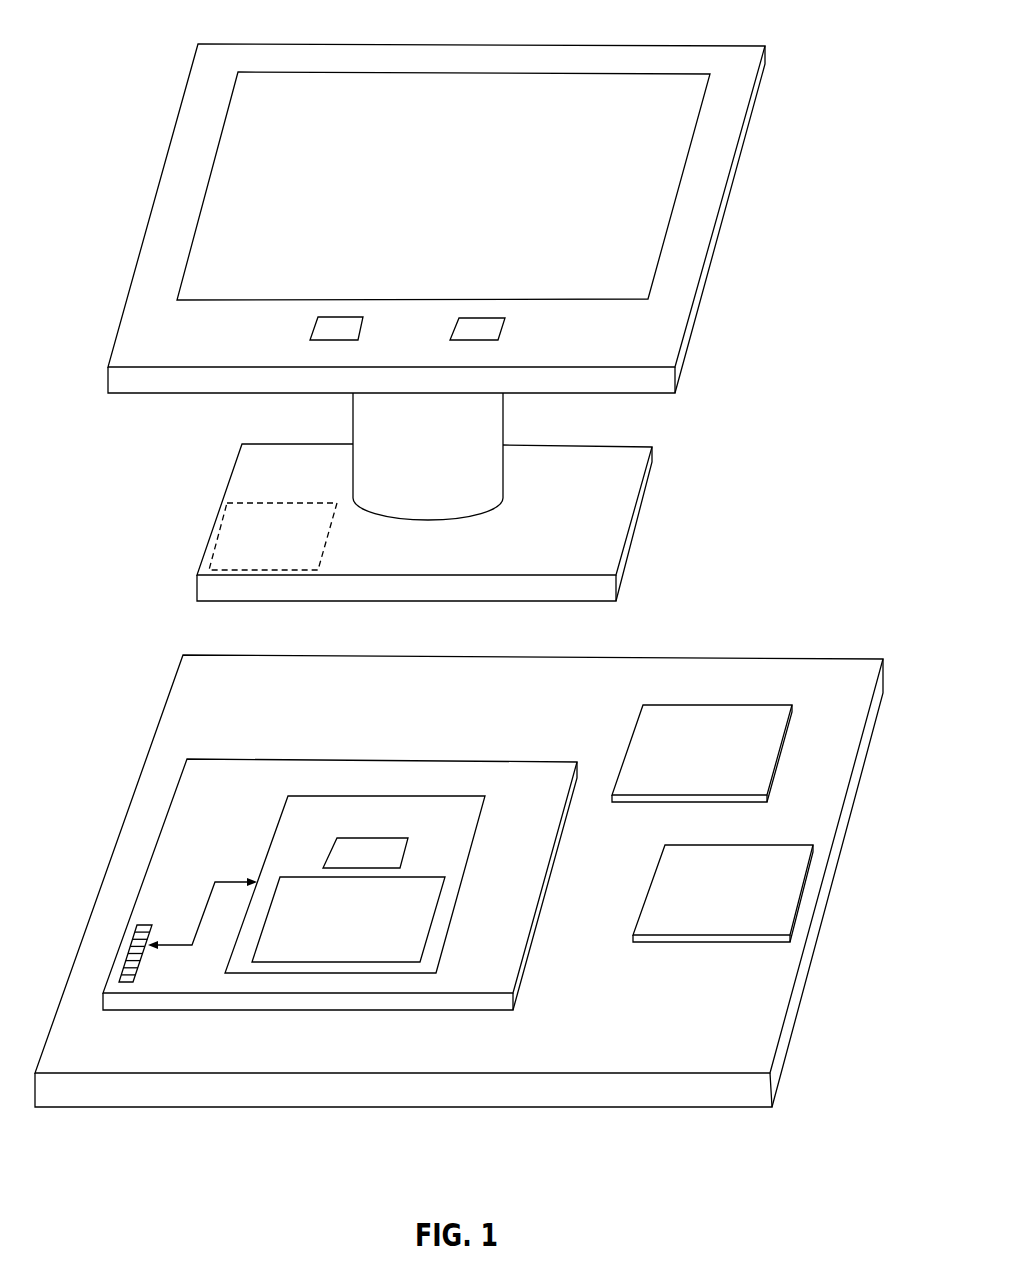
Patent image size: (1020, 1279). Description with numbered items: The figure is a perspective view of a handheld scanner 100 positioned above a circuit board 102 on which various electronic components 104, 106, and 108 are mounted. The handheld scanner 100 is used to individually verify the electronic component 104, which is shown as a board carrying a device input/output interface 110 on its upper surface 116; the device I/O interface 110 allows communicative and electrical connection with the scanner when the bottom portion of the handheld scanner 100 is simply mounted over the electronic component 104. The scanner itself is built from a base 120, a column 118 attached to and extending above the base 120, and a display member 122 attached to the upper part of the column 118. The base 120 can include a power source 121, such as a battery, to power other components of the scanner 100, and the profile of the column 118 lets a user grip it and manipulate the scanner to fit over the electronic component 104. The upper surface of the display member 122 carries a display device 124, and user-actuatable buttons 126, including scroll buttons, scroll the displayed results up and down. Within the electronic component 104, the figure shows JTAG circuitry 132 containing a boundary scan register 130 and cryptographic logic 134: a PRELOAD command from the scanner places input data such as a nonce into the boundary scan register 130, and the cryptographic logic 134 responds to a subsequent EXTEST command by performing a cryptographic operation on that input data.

The handheld scanner 100 is at (810, 223).
The circuit board 102 is at (540, 1082).
The electronic component 104 is at (513, 762).
The electronic component 106 is at (732, 705).
The electronic component 108 is at (747, 845).
The device input/output (I/O) interface 110 is at (133, 950).
The upper surface 116 is at (450, 933).
The column 118 is at (370, 441).
The base 120 is at (613, 498).
The power source 121 is at (215, 543).
The display member 122 is at (737, 171).
The display device 124 is at (558, 103).
The user-actuatable buttons 126 is at (342, 316).
The boundary scan register 130 is at (407, 853).
The JTAG circuitry 132 is at (483, 809).
The cryptographic logic 134 is at (382, 962).